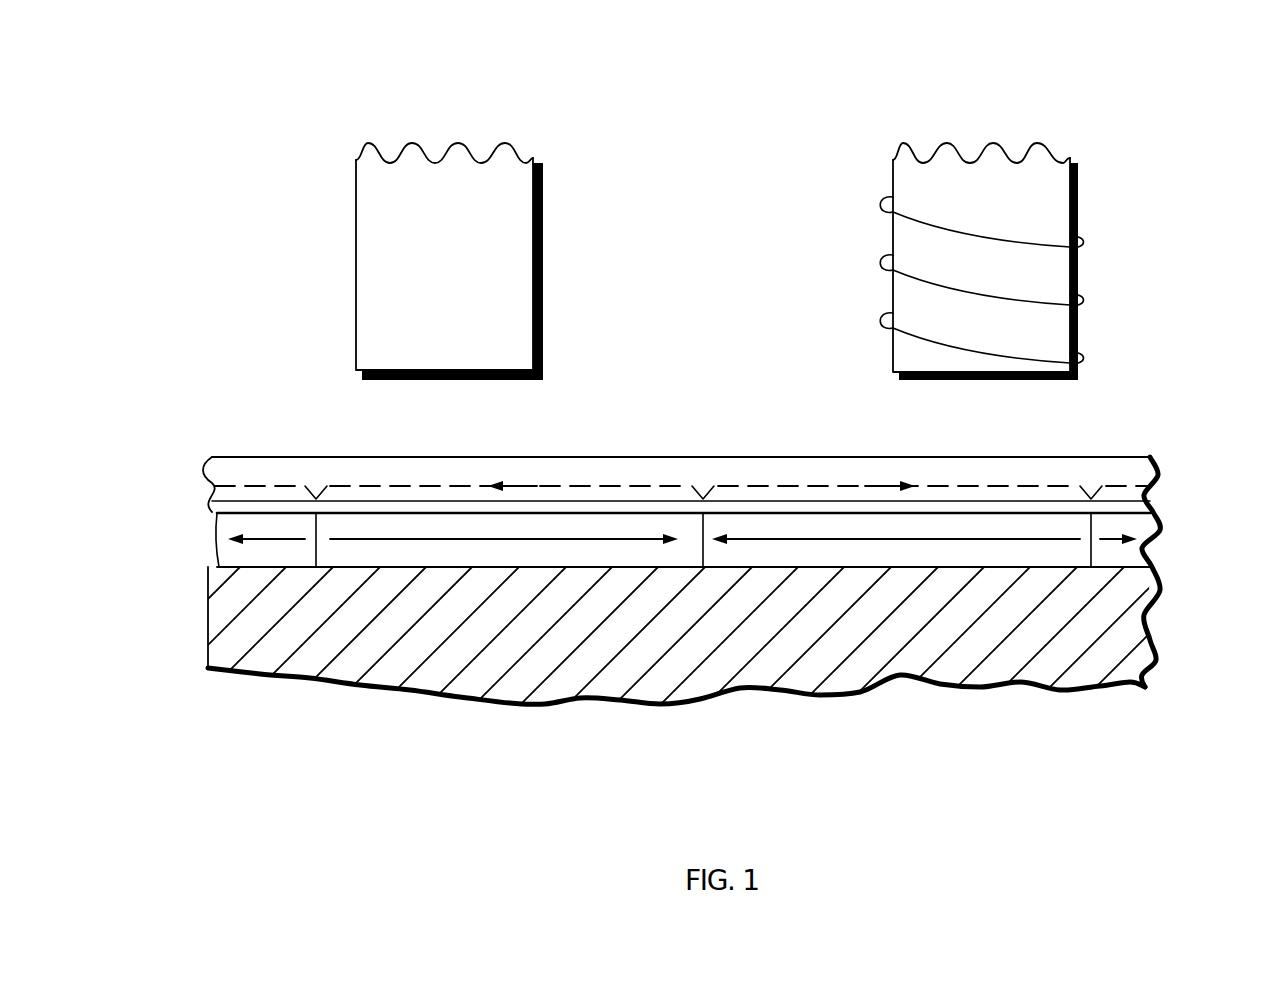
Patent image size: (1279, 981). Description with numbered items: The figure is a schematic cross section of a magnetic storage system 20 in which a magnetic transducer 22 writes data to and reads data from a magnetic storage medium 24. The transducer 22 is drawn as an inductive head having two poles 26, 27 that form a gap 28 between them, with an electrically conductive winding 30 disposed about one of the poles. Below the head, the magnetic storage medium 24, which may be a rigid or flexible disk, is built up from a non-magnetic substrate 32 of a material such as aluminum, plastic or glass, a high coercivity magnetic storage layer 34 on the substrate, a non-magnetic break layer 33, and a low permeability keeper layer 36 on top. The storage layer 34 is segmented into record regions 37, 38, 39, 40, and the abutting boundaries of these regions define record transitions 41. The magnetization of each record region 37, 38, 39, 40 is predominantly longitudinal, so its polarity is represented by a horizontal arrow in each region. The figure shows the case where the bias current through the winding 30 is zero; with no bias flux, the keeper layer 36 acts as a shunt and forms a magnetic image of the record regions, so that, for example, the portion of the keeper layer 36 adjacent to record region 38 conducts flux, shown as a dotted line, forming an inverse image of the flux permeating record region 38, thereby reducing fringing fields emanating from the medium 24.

The magnetic storage system 20 is at (1045, 80).
The magnetic transducer 22 is at (1097, 200).
The magnetic storage medium 24 is at (1186, 501).
The pole 26 is at (368, 380).
The pole 27 is at (1062, 381).
The gap 28 is at (726, 274).
The electrically conductive winding 30 is at (1088, 301).
The substrate 32 is at (393, 673).
The non-magnetic break layer 33 is at (210, 510).
The magnetic storage layer 34 is at (1143, 553).
The low permeability keeper layer 36 is at (397, 486).
The record region 37 is at (230, 553).
The record region 38 is at (358, 555).
The record region 39 is at (850, 553).
The record region 40 is at (1110, 560).
The record transition 41 is at (313, 515).